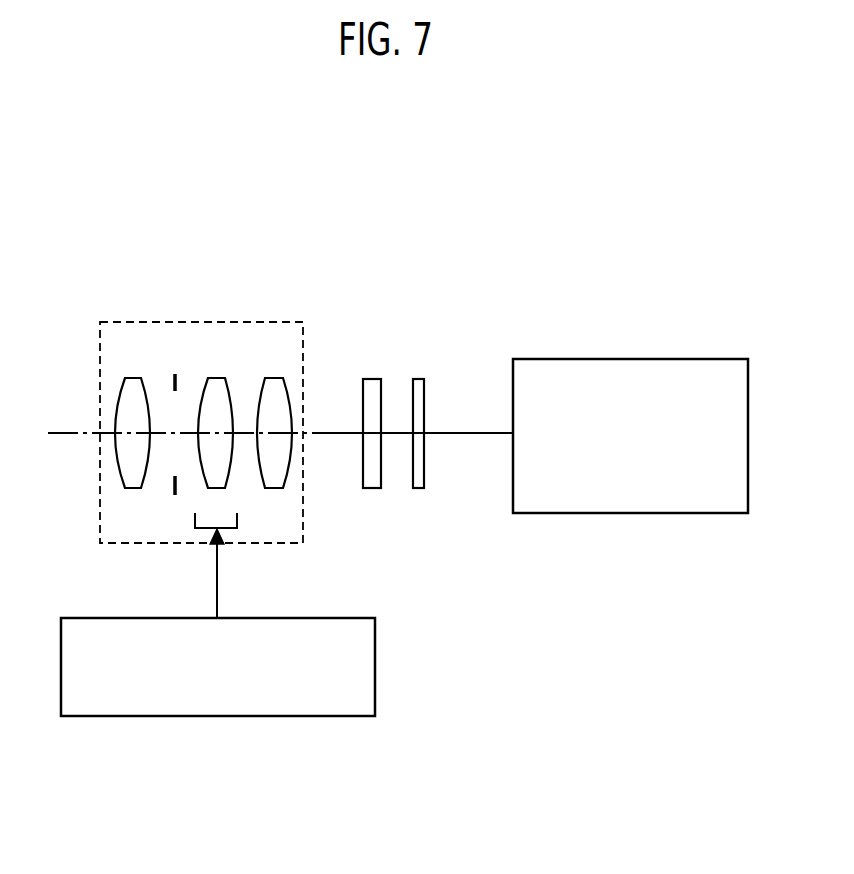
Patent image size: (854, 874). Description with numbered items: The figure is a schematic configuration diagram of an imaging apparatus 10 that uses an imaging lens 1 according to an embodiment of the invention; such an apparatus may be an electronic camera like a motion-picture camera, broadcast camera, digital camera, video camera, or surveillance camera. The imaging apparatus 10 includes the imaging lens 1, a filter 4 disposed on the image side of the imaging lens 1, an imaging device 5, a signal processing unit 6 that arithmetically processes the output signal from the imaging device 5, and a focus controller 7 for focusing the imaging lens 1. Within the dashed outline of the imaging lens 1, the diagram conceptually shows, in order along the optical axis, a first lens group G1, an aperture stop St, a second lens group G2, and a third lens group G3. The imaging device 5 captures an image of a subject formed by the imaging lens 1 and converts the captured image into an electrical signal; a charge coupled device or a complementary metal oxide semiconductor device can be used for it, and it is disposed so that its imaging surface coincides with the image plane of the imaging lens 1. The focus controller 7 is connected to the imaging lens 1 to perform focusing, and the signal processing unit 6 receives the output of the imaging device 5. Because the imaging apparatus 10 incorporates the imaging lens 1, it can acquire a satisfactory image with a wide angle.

The imaging lens 1 is at (99, 516).
The first lens group G1 is at (128, 377).
The second lens group G2 is at (213, 377).
The third lens group G3 is at (273, 377).
The aperture stop St is at (174, 375).
The filter 4 is at (372, 378).
The imaging device 5 is at (419, 378).
The signal processing unit 6 is at (618, 358).
The focus controller 7 is at (300, 617).
The imaging apparatus 10 is at (381, 259).